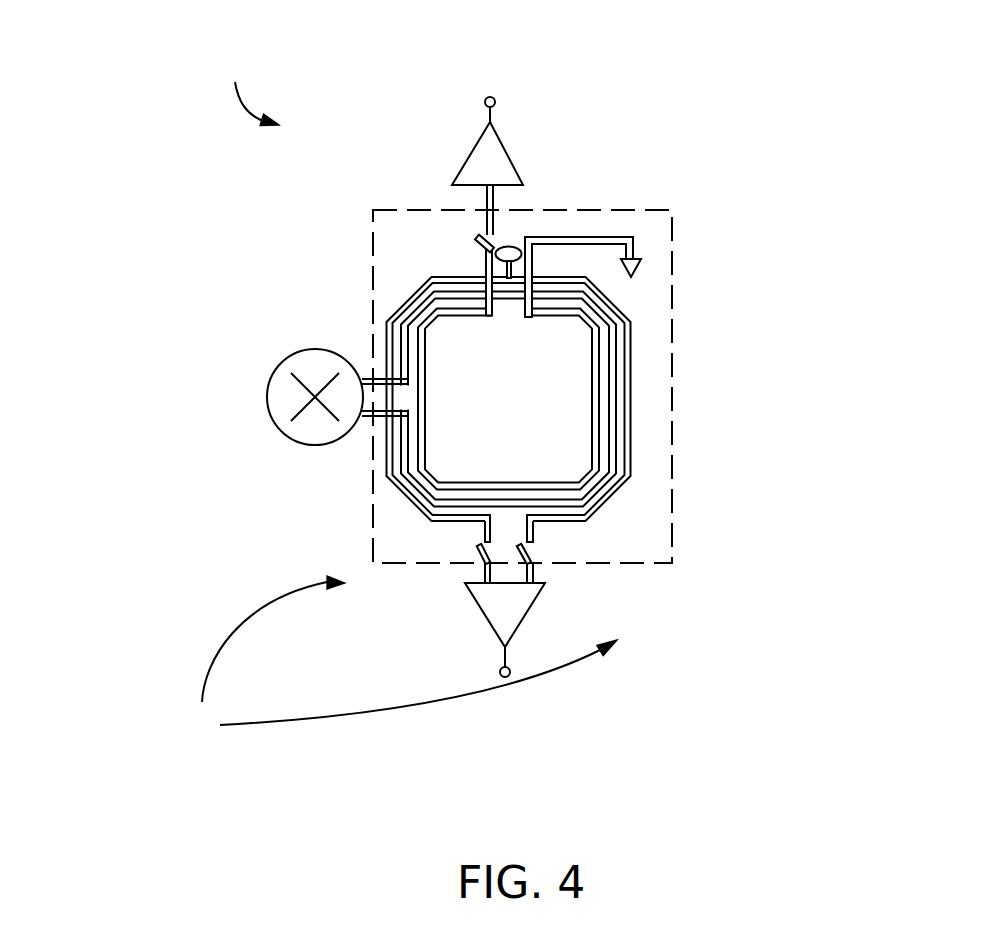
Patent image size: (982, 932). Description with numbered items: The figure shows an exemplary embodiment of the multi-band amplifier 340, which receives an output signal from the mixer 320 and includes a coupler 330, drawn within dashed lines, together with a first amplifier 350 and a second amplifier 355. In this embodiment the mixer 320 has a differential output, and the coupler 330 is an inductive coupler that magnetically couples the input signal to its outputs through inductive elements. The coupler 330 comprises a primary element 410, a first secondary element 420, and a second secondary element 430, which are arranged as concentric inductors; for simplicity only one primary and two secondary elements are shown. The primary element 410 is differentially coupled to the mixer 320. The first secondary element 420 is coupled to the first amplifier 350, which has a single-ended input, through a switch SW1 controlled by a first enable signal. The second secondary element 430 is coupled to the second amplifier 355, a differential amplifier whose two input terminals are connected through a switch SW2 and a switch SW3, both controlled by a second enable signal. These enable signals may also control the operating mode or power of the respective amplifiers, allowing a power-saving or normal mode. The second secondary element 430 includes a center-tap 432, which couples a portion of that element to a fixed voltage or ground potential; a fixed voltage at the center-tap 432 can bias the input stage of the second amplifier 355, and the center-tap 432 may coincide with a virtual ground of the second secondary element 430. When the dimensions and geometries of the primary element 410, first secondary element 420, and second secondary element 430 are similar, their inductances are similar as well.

The multi-band amplifier 340 is at (637, 28).
The coupler 330 is at (673, 235).
The mixer 320 is at (275, 427).
The first amplifier 350 is at (498, 136).
The second amplifier 355 is at (483, 607).
The primary element 410 is at (374, 380).
The first secondary element 420 is at (599, 370).
The second secondary element 430 is at (387, 486).
The center-tap 432 is at (513, 247).
The switch SW1 is at (474, 240).
The switch SW2 is at (478, 547).
The switch SW3 is at (529, 551).